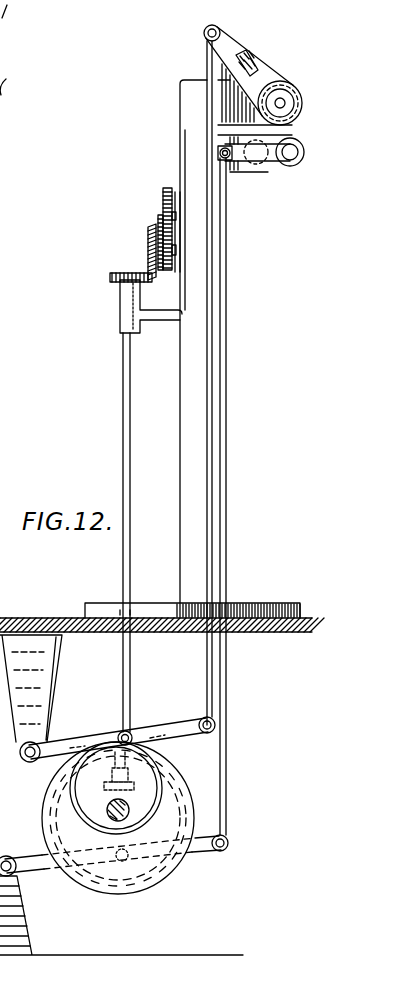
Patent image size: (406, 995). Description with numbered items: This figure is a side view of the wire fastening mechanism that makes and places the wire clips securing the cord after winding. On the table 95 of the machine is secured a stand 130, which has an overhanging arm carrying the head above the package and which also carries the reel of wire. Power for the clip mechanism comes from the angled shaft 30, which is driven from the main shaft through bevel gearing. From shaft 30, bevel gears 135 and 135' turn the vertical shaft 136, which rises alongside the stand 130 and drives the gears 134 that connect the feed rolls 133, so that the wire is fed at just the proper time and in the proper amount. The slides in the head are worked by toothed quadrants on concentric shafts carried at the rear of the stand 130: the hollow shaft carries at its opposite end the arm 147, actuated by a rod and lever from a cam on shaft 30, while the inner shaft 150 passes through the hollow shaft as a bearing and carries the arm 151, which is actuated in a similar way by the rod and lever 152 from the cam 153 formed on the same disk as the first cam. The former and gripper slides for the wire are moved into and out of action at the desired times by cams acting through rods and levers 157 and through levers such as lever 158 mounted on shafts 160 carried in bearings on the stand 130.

The shaft 30 is at (109, 812).
The table 95 is at (48, 618).
The stand 130 is at (180, 440).
The feed rolls 133 is at (179, 190).
The gears 134 is at (165, 230).
The bevel gear 135 is at (131, 253).
The bevel gear 135' is at (162, 767).
The vertical shaft 136 is at (122, 438).
The arm 147 is at (279, 72).
The shaft 150 is at (283, 100).
The arm 151 is at (251, 68).
The rod and lever 152 is at (193, 689).
The cam 153 is at (119, 734).
The rods and levers 157 is at (208, 837).
The lever 158 is at (275, 163).
The shafts 160 is at (291, 160).